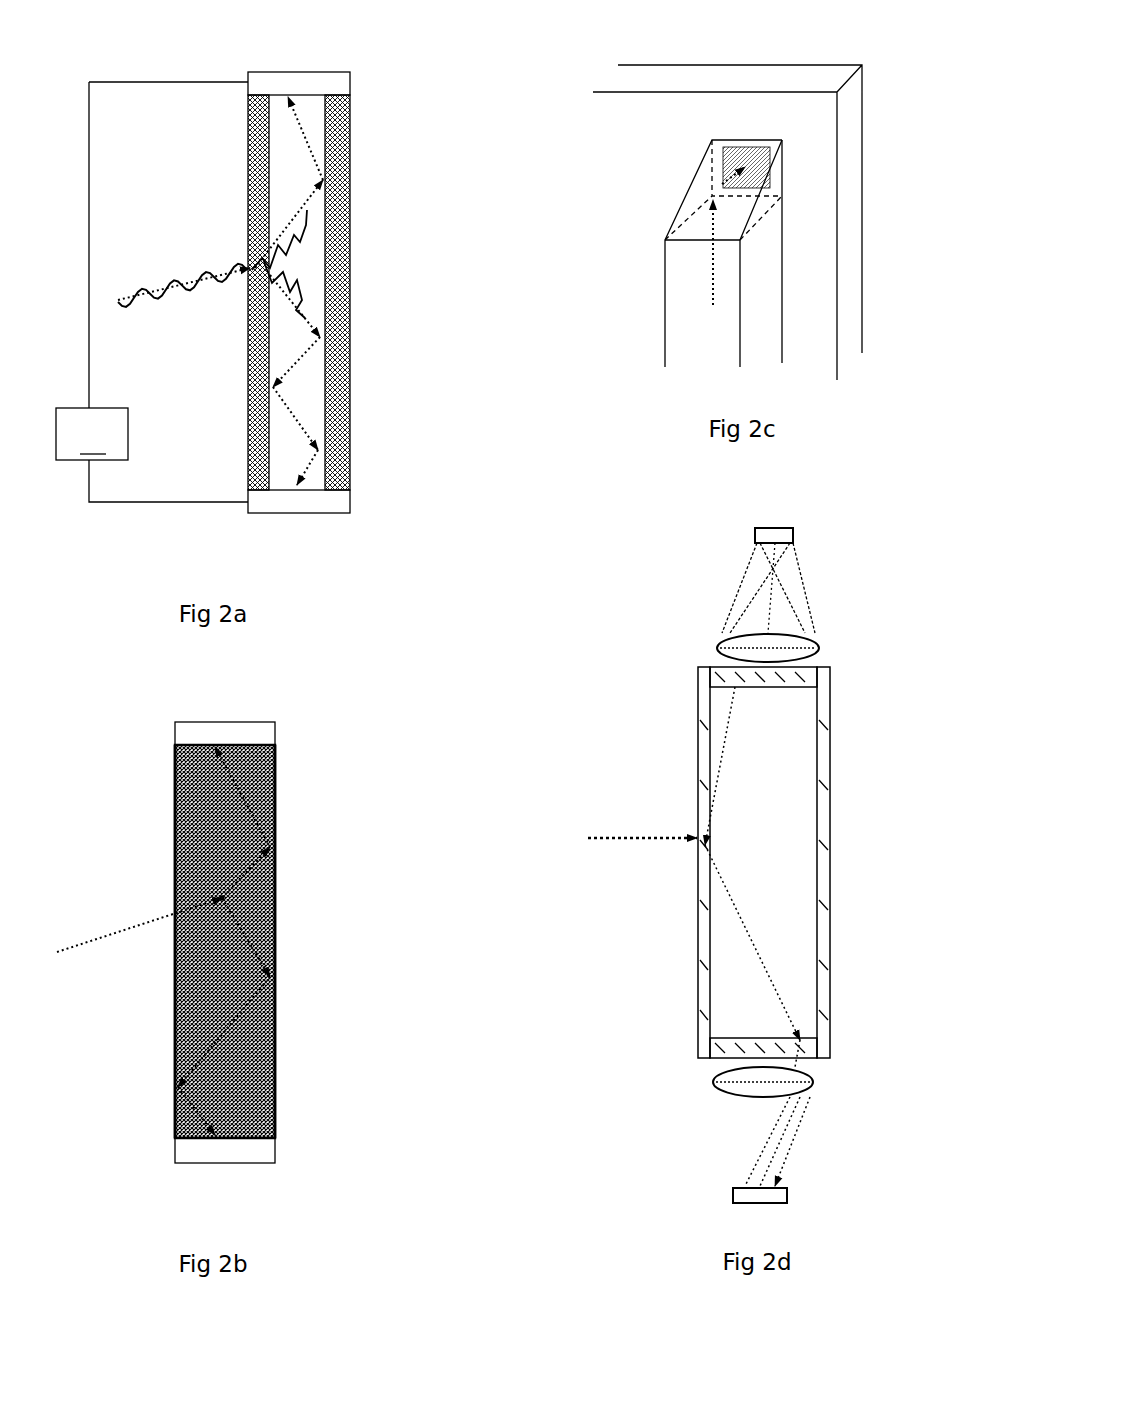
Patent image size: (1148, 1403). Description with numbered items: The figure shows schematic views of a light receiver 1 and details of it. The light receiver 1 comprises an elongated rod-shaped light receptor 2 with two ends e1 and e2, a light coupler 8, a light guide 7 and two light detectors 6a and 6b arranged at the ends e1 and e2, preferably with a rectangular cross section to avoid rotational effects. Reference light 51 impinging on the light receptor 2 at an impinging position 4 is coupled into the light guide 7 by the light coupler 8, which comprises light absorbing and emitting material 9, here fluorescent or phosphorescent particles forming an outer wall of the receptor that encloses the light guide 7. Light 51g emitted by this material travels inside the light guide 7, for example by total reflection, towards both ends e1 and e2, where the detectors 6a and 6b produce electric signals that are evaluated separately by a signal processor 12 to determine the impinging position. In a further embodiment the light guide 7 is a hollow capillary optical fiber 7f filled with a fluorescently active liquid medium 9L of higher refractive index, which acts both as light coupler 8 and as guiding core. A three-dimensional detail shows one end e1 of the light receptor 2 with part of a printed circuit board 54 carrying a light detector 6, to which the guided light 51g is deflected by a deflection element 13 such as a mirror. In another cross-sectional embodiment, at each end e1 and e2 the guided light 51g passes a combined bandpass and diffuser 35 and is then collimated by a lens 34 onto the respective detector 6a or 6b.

In FIG. 2A, the light receiver 1 is at (333, 32).
In FIG. 2B, the light receiver 1 is at (258, 682).
In FIG. 2A, the light receptor 2 is at (410, 120).
In FIG. 2B, the light receptor 2 is at (335, 770).
In FIG. 2D, the light receptor 2 is at (880, 665).
In FIG. 2A, the impinging position 4 is at (252, 265).
In FIG. 2B, the impinging position 4 is at (175, 900).
In FIG. 2C, the light detector 6 is at (737, 153).
In FIG. 2A, the light detector 6a is at (328, 75).
In FIG. 2B, the light detector 6a is at (255, 722).
In FIG. 2D, the light detector 6a is at (777, 535).
In FIG. 2A, the light detector 6b is at (326, 502).
In FIG. 2B, the light detector 6b is at (250, 1152).
In FIG. 2D, the light detector 6b is at (783, 1187).
In FIG. 2A, the light guide 7 is at (313, 372).
In FIG. 2C, the light guide 7 is at (757, 275).
In FIG. 2B, the light guide 7 is at (176, 941).
In FIG. 2D, the light guide 7 is at (764, 862).
In FIG. 2B, the hollow capillary optical fiber 7f is at (277, 1025).
In FIG. 2A, the light coupler 8 is at (234, 131).
In FIG. 2B, the light coupler 8 is at (158, 782).
In FIG. 2A, the light absorbing and emitting material 9 is at (333, 262).
In FIG. 2B, the liquid medium 9L is at (260, 888).
In FIG. 2A, the signal processor 12 is at (152, 292).
In FIG. 2C, the deflection element 13 is at (700, 172).
In FIG. 2D, the lens 34 is at (735, 655).
In FIG. 2D, the combined bandpass and diffuser 35 is at (735, 677).
In FIG. 2A, the reference light 51 is at (207, 265).
In FIG. 2B, the reference light 51 is at (131, 912).
In FIG. 2D, the reference light 51 is at (633, 838).
In FIG. 2A, the guided light 51g is at (297, 247).
In FIG. 2C, the guided light 51g is at (713, 250).
In FIG. 2B, the guided light 51g is at (230, 898).
In FIG. 2D, the guided light 51g is at (775, 883).
In FIG. 2C, the printed circuit board 54 is at (837, 110).
In FIG. 2A, the first end e1 is at (233, 78).
In FIG. 2C, the first end e1 is at (837, 110).
In FIG. 2B, the first end e1 is at (157, 727).
In FIG. 2D, the first end e1 is at (683, 606).
In FIG. 2A, the second end e2 is at (238, 532).
In FIG. 2B, the second end e2 is at (163, 1180).
In FIG. 2D, the second end e2 is at (682, 1110).